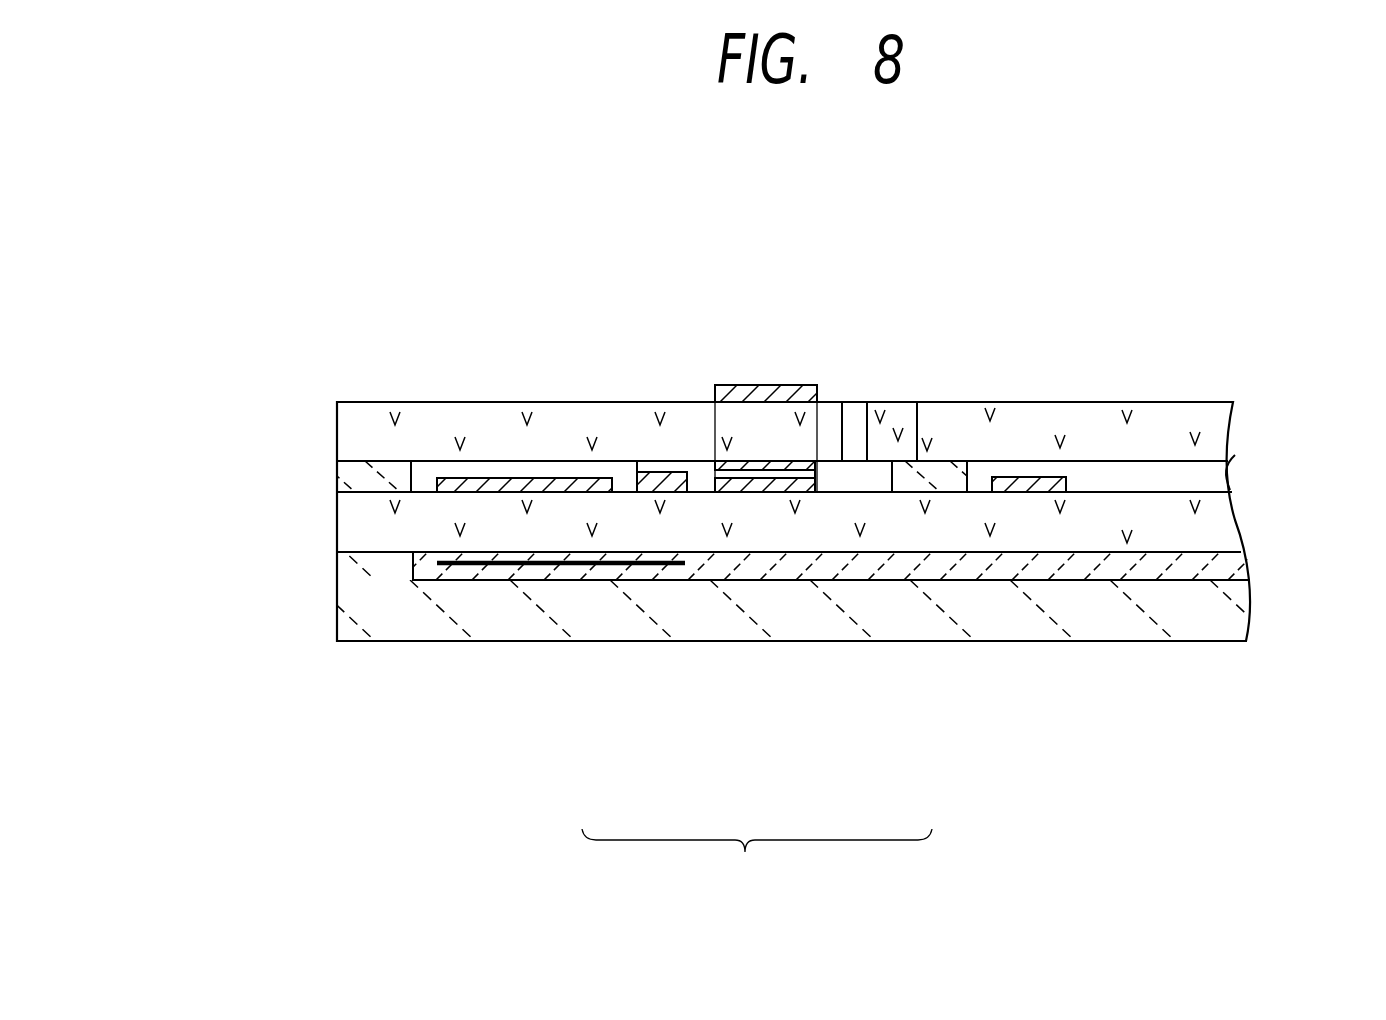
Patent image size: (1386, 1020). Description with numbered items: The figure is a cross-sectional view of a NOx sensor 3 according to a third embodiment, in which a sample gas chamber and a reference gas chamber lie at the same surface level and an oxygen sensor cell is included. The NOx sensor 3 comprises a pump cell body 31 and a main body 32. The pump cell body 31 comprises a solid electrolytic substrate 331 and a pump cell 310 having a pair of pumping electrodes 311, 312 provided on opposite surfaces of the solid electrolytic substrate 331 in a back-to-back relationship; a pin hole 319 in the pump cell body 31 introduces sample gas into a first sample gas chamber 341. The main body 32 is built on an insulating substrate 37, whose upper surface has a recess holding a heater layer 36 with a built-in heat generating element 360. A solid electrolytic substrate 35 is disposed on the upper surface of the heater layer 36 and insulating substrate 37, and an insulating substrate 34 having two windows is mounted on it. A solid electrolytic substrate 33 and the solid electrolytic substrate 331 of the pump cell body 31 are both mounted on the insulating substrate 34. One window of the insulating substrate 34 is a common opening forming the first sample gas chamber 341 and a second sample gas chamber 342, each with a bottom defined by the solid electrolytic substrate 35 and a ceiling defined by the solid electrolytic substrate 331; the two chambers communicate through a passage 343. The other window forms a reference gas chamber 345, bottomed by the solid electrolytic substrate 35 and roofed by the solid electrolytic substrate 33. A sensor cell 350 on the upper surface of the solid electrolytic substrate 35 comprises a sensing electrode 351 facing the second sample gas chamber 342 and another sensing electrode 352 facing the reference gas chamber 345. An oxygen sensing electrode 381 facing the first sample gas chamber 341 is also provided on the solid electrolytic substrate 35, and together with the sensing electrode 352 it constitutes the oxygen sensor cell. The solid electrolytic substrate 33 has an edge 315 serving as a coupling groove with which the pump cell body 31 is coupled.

The NOx sensor 3 is at (600, 253).
The pump cell body 31 is at (373, 395).
The main body 32 is at (318, 604).
The solid electrolytic substrate 33 is at (1157, 420).
The insulating substrate 34 is at (348, 480).
The solid electrolytic substrate 35 is at (1222, 523).
The heater layer 36 is at (1237, 562).
The insulating substrate 37 is at (1230, 609).
The pump cell 310 is at (784, 372).
The pumping electrode 311 is at (805, 460).
The pumping electrode 312 is at (741, 388).
The edge 315 is at (917, 414).
The pin hole 319 is at (868, 425).
The solid electrolytic substrate 331 is at (487, 420).
The first sample gas chamber 341 is at (857, 485).
The second sample gas chamber 342 is at (623, 478).
The passage 343 is at (676, 462).
The reference gas chamber 345 is at (1225, 468).
The sensor cell 350 is at (757, 859).
The sensing electrode 351 is at (540, 487).
The sensing electrode 352 is at (993, 490).
The heat generating element 360 is at (683, 572).
The oxygen sensing electrode 381 is at (782, 485).